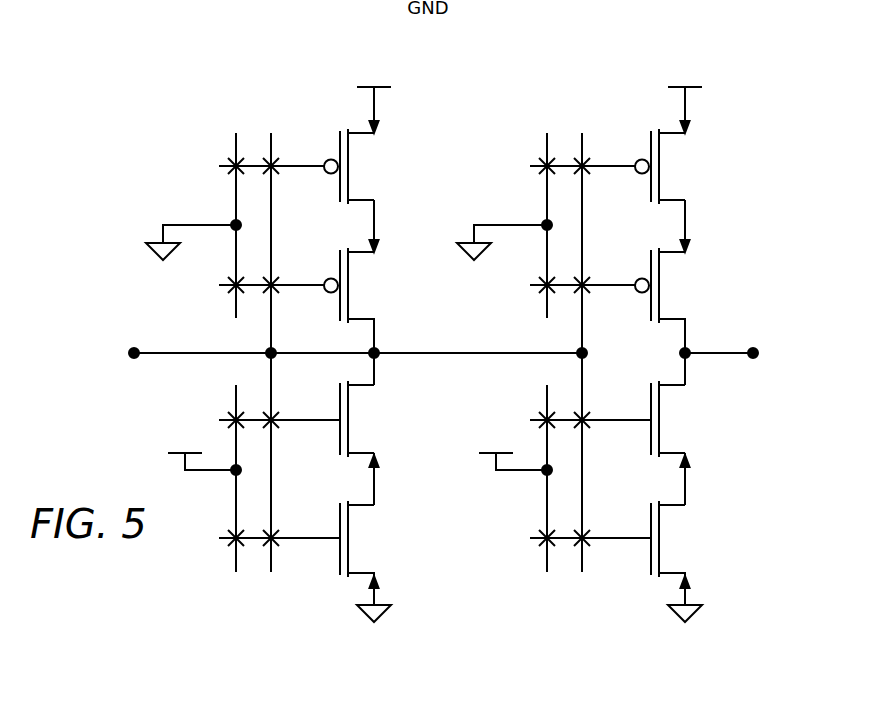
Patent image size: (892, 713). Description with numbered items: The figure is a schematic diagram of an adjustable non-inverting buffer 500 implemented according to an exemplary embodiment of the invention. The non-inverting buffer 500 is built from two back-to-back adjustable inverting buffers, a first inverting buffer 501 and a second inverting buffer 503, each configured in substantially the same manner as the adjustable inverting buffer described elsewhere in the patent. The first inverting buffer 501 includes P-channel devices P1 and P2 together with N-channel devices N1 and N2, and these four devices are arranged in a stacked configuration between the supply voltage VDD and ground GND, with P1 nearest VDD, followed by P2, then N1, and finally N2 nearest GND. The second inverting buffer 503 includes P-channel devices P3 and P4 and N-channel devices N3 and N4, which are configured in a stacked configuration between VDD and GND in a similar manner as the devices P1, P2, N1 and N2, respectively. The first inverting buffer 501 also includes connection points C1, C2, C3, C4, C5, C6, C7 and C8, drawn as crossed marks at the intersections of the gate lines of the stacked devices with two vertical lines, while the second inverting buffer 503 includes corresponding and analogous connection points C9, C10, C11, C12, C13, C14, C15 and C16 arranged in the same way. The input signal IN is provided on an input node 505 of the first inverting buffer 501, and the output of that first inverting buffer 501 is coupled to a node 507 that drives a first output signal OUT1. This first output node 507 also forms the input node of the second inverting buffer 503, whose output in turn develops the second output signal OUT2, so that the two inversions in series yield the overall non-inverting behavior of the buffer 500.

The adjustable non-inverting buffer 500 is at (205, 73).
The first adjustable inverting buffer 501 is at (430, 138).
The second adjustable inverting buffer 503 is at (741, 138).
The input node 505 is at (182, 353).
The first output node 507 is at (398, 355).
The connection point C1 is at (224, 157).
The connection point C2 is at (284, 157).
The connection point C3 is at (224, 275).
The connection point C4 is at (284, 275).
The connection point C5 is at (224, 410).
The connection point C6 is at (283, 410).
The connection point C7 is at (224, 528).
The connection point C8 is at (283, 528).
The connection point C9 is at (535, 157).
The connection point C10 is at (597, 157).
The connection point C11 is at (530, 275).
The connection point C12 is at (597, 275).
The connection point C13 is at (529, 410).
The connection point C14 is at (598, 410).
The connection point C15 is at (529, 528).
The connection point C16 is at (598, 528).
The P-channel device P1 is at (351, 166).
The P-channel device P2 is at (351, 285).
The P-channel device P3 is at (662, 166).
The P-channel device P4 is at (662, 285).
The N-channel device N1 is at (361, 419).
The N-channel device N2 is at (361, 539).
The N-channel device N3 is at (672, 419).
The N-channel device N4 is at (672, 539).